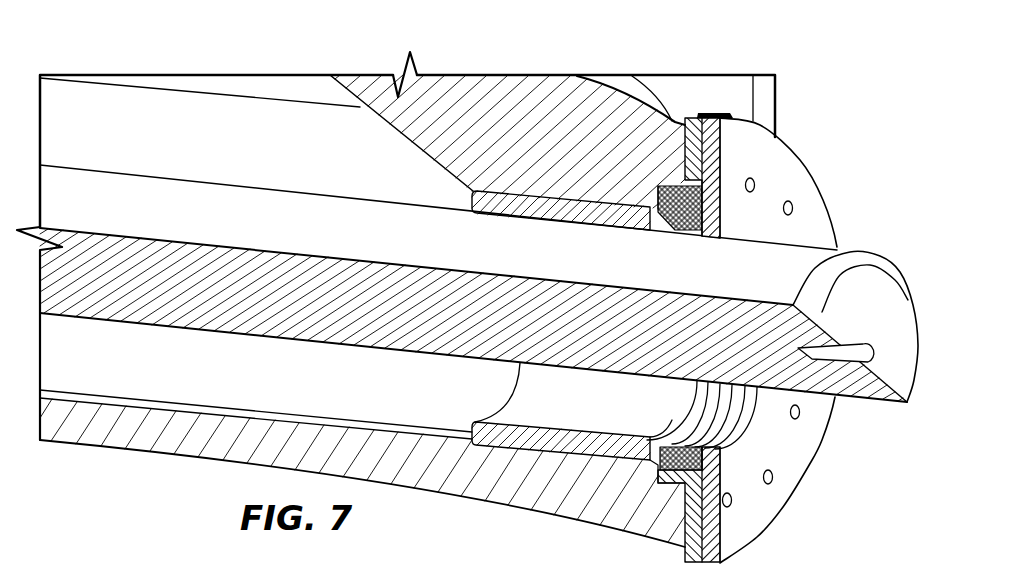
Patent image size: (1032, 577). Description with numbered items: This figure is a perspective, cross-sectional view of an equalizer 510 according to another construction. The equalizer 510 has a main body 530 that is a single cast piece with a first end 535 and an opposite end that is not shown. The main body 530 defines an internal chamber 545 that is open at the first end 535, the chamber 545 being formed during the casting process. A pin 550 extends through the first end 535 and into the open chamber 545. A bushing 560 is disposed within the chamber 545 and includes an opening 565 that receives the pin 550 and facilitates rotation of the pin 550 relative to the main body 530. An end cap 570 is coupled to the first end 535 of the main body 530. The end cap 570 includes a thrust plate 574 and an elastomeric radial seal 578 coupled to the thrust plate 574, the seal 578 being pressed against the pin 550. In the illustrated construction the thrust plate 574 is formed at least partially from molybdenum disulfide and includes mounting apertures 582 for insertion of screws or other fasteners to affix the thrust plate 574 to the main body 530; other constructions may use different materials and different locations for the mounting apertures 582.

The equalizer 510 is at (149, 58).
The internal chamber 545 is at (312, 155).
The opening 565 is at (510, 212).
The main body 530 is at (494, 92).
The bushing 560 is at (540, 192).
The first end 535 is at (613, 138).
The radial seal 578 is at (667, 186).
The mounting apertures 582 is at (788, 200).
The end cap 570 is at (808, 145).
The thrust plate 574 is at (817, 227).
The pin 550 is at (901, 268).